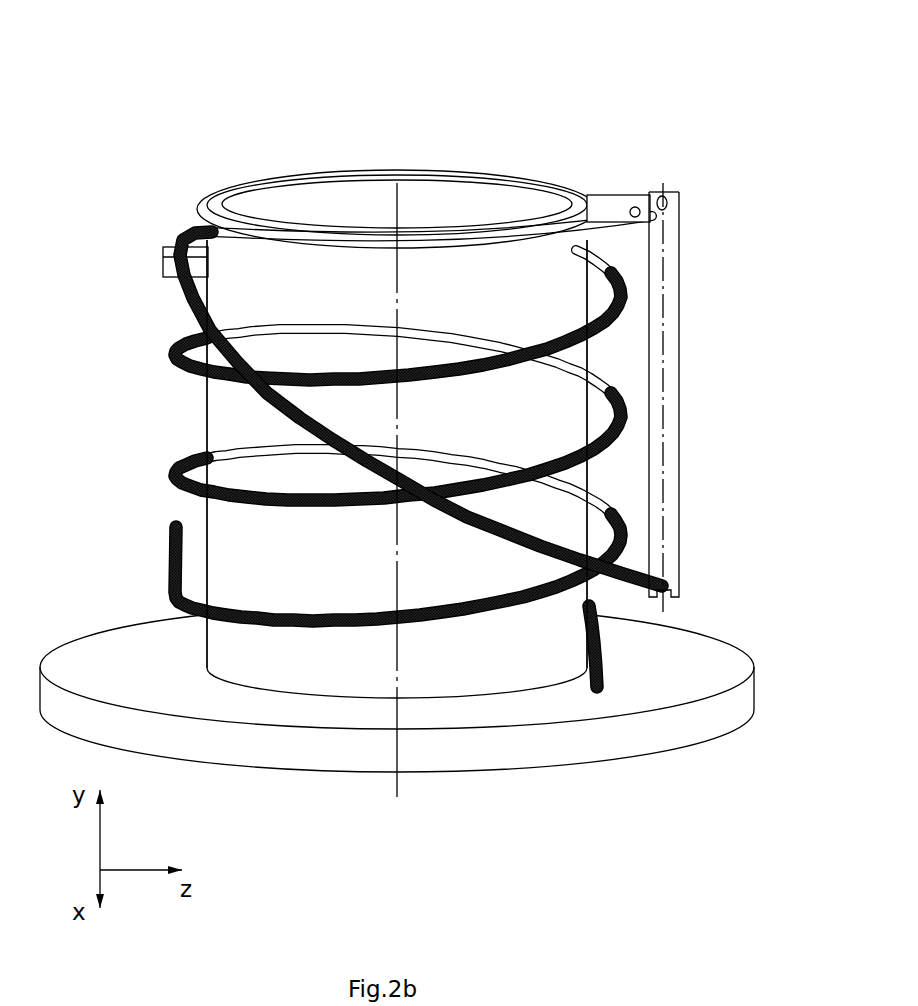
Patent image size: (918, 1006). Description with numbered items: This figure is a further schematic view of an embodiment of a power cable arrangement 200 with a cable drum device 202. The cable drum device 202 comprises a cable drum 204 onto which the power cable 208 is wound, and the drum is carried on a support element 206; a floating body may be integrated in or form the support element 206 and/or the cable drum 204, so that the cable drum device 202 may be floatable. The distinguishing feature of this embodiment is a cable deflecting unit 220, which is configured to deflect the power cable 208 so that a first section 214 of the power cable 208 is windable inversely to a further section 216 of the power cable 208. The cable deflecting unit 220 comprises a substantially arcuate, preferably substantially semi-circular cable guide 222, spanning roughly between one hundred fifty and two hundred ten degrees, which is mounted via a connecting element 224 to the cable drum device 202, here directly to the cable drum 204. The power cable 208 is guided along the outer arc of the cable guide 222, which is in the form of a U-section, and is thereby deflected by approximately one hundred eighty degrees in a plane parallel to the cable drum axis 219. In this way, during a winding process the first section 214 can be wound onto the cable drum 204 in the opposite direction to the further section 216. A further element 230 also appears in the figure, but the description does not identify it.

The power cable arrangement 200 is at (148, 100).
The cable drum device 202 is at (380, 368).
The cable drum 204 is at (303, 197).
The support element 206 is at (680, 728).
The power cable 208 is at (178, 323).
The first section of the power cable 214 is at (197, 447).
The further section of the power cable 216 is at (174, 483).
The cable drum axis 219 is at (399, 786).
The cable deflecting unit 220 is at (687, 366).
The cable guide 222 is at (672, 262).
The connecting element 224 is at (606, 210).
The rail axis 230 is at (666, 357).